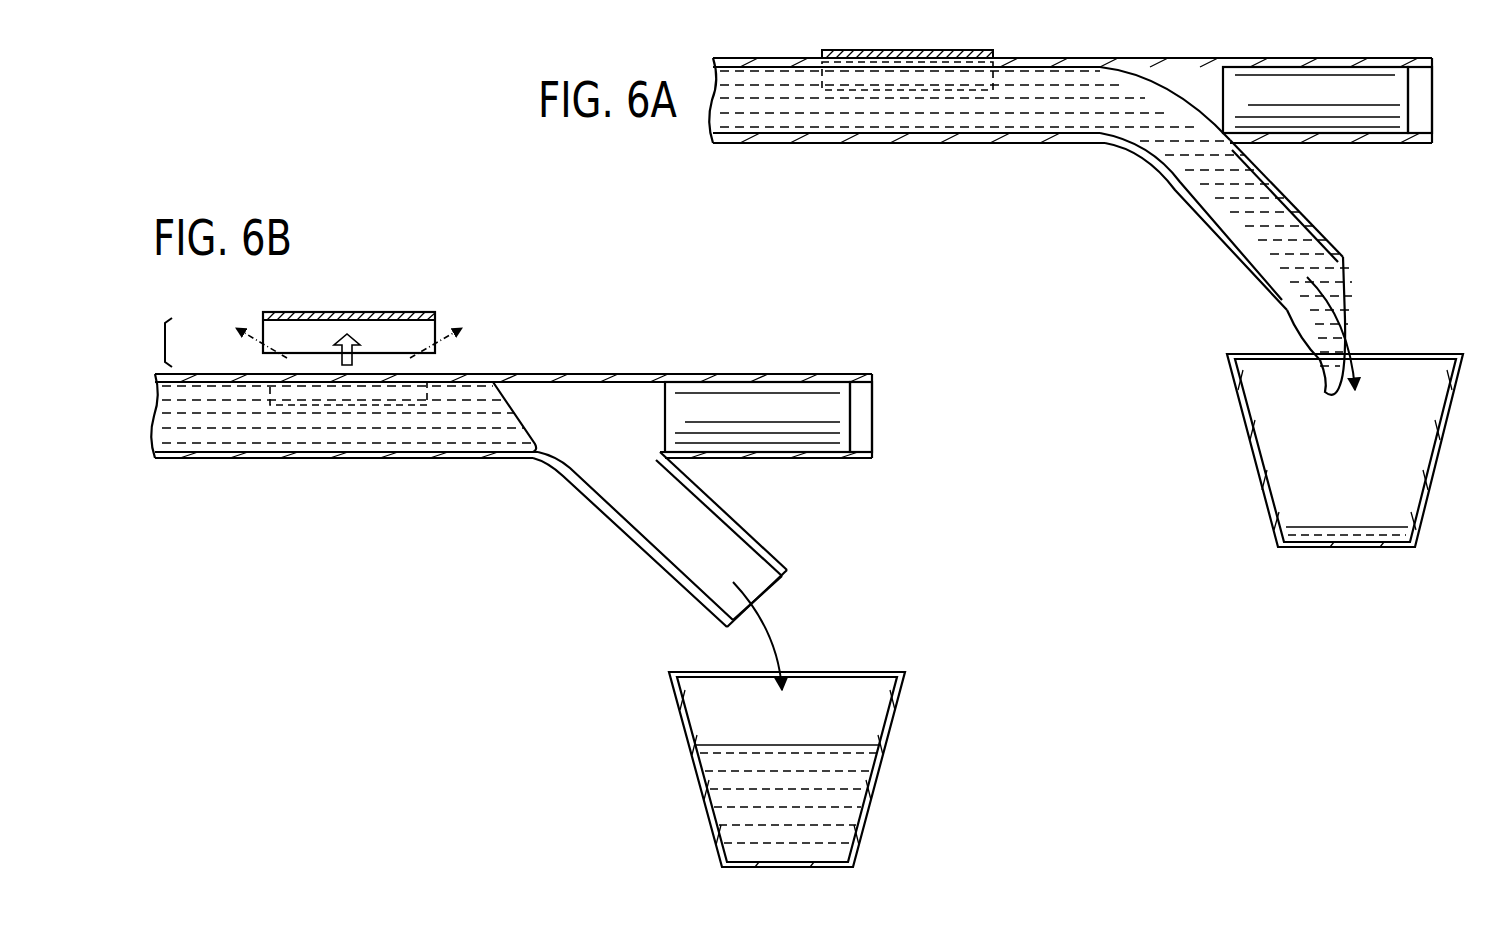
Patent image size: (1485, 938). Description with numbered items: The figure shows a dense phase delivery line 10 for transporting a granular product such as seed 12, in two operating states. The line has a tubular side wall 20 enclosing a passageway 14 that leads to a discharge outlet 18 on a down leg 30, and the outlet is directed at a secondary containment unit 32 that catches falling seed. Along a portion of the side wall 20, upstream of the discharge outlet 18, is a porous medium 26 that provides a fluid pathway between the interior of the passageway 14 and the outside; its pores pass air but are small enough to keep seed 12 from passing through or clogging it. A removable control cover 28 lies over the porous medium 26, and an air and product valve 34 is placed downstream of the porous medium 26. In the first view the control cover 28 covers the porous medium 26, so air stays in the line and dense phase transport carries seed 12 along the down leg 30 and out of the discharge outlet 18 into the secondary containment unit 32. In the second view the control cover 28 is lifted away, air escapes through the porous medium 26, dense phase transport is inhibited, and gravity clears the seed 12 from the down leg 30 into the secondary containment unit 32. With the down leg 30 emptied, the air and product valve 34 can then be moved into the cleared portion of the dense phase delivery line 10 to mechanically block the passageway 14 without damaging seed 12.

In FIG. 6A, the dense phase delivery line 10 is at (1022, 200).
In FIG. 6B, the dense phase delivery line 10 is at (578, 342).
In FIG. 6A, the seed 12 is at (788, 103).
In FIG. 6B, the seed 12 is at (388, 422).
In FIG. 6A, the passageway 14 is at (885, 117).
In FIG. 6B, the passageway 14 is at (280, 440).
In FIG. 6A, the discharge outlet 18 is at (1343, 257).
In FIG. 6B, the discharge outlet 18 is at (770, 588).
In FIG. 6A, the side wall 20 is at (1060, 142).
In FIG. 6B, the side wall 20 is at (455, 460).
In FIG. 6A, the porous medium 26 is at (980, 55).
In FIG. 6B, the porous medium 26 is at (410, 375).
In FIG. 6A, the control cover 28 is at (905, 50).
In FIG. 6B, the control cover 28 is at (400, 312).
In FIG. 6A, the down leg 30 is at (1298, 207).
In FIG. 6B, the down leg 30 is at (745, 522).
In FIG. 6A, the secondary containment unit 32 is at (1225, 435).
In FIG. 6B, the secondary containment unit 32 is at (915, 755).
In FIG. 6A, the air and product valve 34 is at (1250, 90).
In FIG. 6B, the air and product valve 34 is at (693, 407).